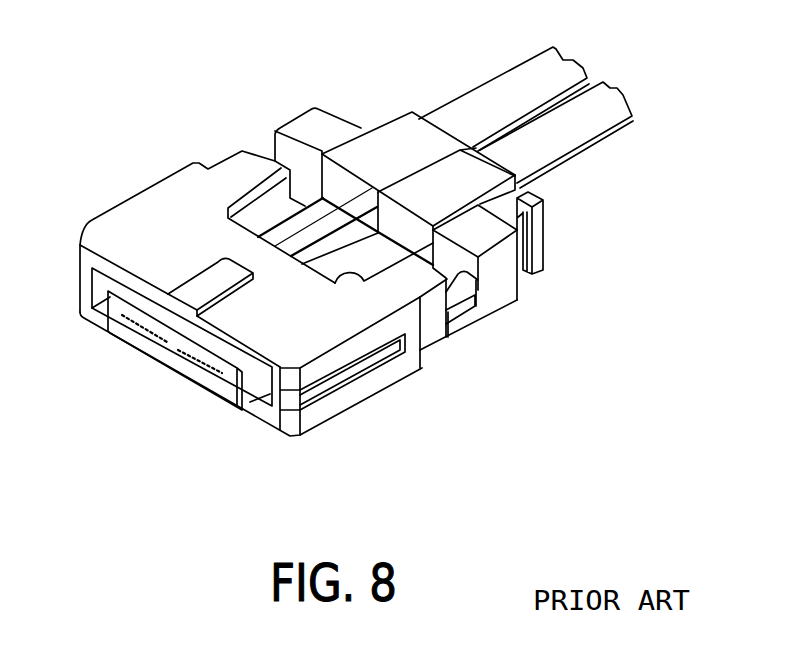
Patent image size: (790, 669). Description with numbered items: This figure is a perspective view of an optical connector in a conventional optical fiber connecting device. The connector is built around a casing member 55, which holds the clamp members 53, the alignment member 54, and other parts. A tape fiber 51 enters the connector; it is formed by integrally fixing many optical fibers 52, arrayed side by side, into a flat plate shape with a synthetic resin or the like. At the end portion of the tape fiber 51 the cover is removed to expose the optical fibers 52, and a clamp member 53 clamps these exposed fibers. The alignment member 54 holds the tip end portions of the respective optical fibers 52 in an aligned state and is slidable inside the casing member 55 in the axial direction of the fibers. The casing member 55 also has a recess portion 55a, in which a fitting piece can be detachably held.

The tape fiber 51 is at (583, 123).
The optical fibers 52 is at (374, 240).
The clamp member 53 is at (407, 135).
The alignment member 54 is at (160, 353).
The casing member 55 is at (178, 182).
The recess portion 55a is at (408, 232).